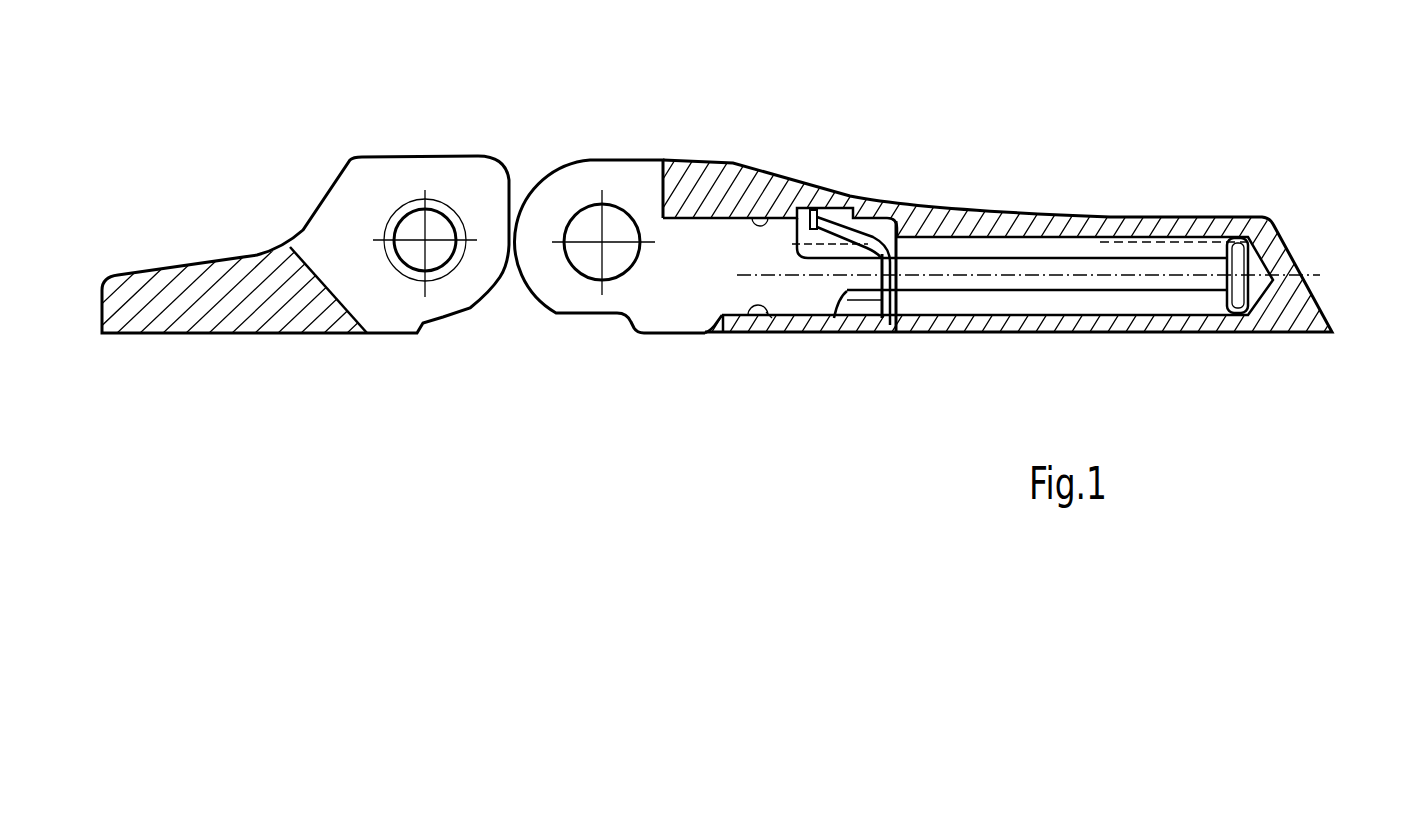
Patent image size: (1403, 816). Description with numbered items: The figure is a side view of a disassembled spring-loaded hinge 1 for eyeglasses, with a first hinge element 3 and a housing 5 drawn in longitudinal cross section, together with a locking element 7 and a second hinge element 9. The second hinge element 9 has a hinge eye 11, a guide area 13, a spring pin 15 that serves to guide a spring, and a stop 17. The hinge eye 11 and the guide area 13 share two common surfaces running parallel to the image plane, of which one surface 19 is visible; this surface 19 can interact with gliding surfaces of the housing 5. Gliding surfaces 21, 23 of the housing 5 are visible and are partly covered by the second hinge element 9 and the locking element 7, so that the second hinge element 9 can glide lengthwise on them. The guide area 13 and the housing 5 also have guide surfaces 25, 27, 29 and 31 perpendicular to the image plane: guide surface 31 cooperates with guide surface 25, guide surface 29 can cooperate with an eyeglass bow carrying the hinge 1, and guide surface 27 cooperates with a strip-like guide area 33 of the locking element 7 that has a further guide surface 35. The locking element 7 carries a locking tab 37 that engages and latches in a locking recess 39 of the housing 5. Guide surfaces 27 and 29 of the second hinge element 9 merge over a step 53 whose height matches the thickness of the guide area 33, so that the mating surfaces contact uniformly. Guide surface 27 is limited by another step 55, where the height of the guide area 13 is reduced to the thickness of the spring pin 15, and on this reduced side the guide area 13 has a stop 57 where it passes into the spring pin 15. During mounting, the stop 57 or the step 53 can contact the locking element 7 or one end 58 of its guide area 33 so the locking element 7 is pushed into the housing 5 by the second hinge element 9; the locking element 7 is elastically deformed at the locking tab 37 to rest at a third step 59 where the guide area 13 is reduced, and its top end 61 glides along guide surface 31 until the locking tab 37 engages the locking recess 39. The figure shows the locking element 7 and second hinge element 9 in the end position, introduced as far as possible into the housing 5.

The spring-loaded hinge 1 is at (975, 232).
The first hinge element 3 is at (262, 250).
The housing 5 is at (1207, 212).
The locking element 7 is at (878, 335).
The second hinge element 9 is at (622, 150).
The hinge eye 11 is at (422, 238).
The guide area 13 is at (684, 240).
The spring pin 15 is at (1150, 267).
The stop 17 is at (1255, 265).
The surface 19 is at (708, 272).
The gliding surface 21 is at (887, 245).
The gliding surface 23 is at (855, 318).
The guide surface 25 is at (730, 215).
The guide surface 27 is at (788, 320).
The guide surface 29 is at (677, 340).
The guide surface 31 is at (798, 207).
The guide area 33 is at (827, 322).
The guide surface 35 is at (752, 312).
The locking tab 37 is at (855, 205).
The locking recess 39 is at (858, 212).
The step 53 is at (718, 320).
The step 55 is at (903, 256).
The stop 57 is at (902, 288).
The end of guide area 58 is at (727, 297).
The third step 59 is at (802, 208).
The top end 61 is at (812, 209).